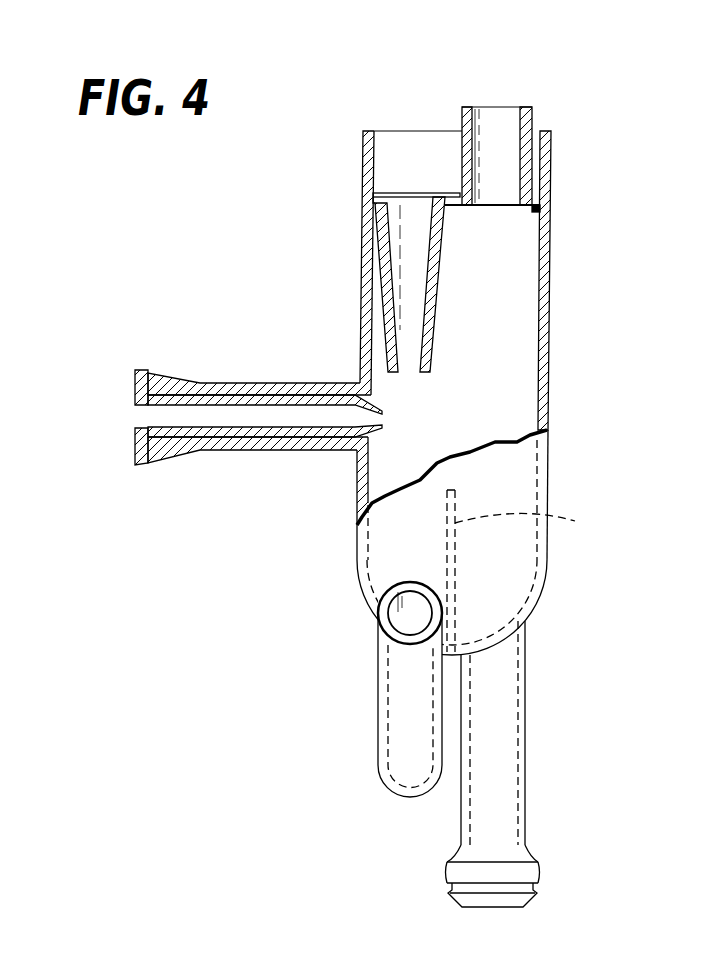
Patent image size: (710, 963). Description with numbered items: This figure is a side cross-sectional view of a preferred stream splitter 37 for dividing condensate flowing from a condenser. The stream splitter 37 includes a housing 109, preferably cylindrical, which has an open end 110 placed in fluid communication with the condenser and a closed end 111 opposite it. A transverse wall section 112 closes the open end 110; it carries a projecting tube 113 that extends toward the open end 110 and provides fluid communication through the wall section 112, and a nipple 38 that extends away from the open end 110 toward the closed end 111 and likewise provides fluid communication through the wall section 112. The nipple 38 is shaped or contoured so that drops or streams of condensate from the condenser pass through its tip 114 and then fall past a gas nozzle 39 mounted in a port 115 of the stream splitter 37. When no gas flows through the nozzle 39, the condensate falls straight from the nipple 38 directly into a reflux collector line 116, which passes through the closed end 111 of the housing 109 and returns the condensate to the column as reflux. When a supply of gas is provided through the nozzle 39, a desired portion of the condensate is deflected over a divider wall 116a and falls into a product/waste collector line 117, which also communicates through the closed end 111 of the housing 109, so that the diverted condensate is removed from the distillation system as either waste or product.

The stream splitter 37 is at (503, 393).
The nipple 38 is at (393, 300).
The gas nozzle 39 is at (150, 420).
The housing 109 is at (547, 263).
The open end 110 is at (395, 138).
The closed end 111 is at (535, 595).
The transverse wall section 112 is at (533, 210).
The projecting tube 113 is at (530, 120).
The tip 114 is at (430, 372).
The port 115 is at (325, 447).
The reflux collector line 116 is at (390, 656).
The divider wall 116a is at (575, 521).
The product/waste collector line 117 is at (513, 682).